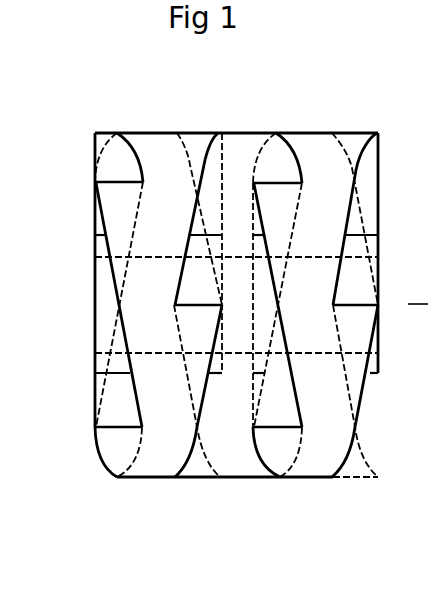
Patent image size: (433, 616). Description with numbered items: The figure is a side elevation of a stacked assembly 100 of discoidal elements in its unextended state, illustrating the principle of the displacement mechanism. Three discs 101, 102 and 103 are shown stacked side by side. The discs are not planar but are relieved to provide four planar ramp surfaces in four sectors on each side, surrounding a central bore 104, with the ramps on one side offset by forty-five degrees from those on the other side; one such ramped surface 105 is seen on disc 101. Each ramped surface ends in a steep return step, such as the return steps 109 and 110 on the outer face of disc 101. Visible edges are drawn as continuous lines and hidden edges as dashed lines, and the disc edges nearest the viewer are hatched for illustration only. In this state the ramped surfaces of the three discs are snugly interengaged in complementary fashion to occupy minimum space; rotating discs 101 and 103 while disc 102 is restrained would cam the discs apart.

The stacked assembly 100 is at (235, 133).
The disc 101 is at (130, 349).
The disc 102 is at (238, 349).
The disc 103 is at (320, 478).
The central bore 104 is at (93, 330).
The ramped surface 105 is at (95, 371).
The return step 109 is at (95, 223).
The return step 110 is at (93, 407).